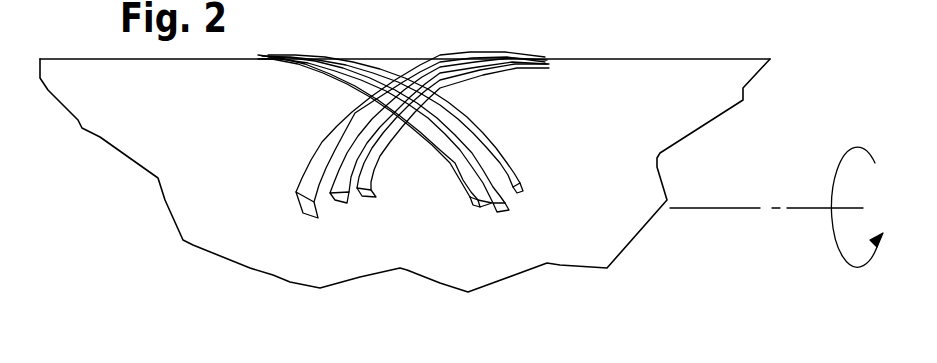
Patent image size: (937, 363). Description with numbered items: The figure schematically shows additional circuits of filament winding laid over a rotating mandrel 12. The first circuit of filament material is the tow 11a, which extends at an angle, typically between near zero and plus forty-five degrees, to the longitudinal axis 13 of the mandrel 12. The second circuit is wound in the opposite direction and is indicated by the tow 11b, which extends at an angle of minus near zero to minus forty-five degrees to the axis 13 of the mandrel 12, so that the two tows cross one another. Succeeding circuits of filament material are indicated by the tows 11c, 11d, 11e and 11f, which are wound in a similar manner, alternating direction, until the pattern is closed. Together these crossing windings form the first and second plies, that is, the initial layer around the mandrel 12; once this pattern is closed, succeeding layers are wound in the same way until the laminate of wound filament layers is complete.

The tow 11a is at (386, 190).
The tow 11b is at (451, 191).
The tow 11c is at (429, 180).
The tow 11d is at (427, 190).
The tow 11e is at (472, 158).
The tow 11f is at (386, 177).
The mandrel 12 is at (595, 75).
The longitudinal axis 13 is at (745, 207).